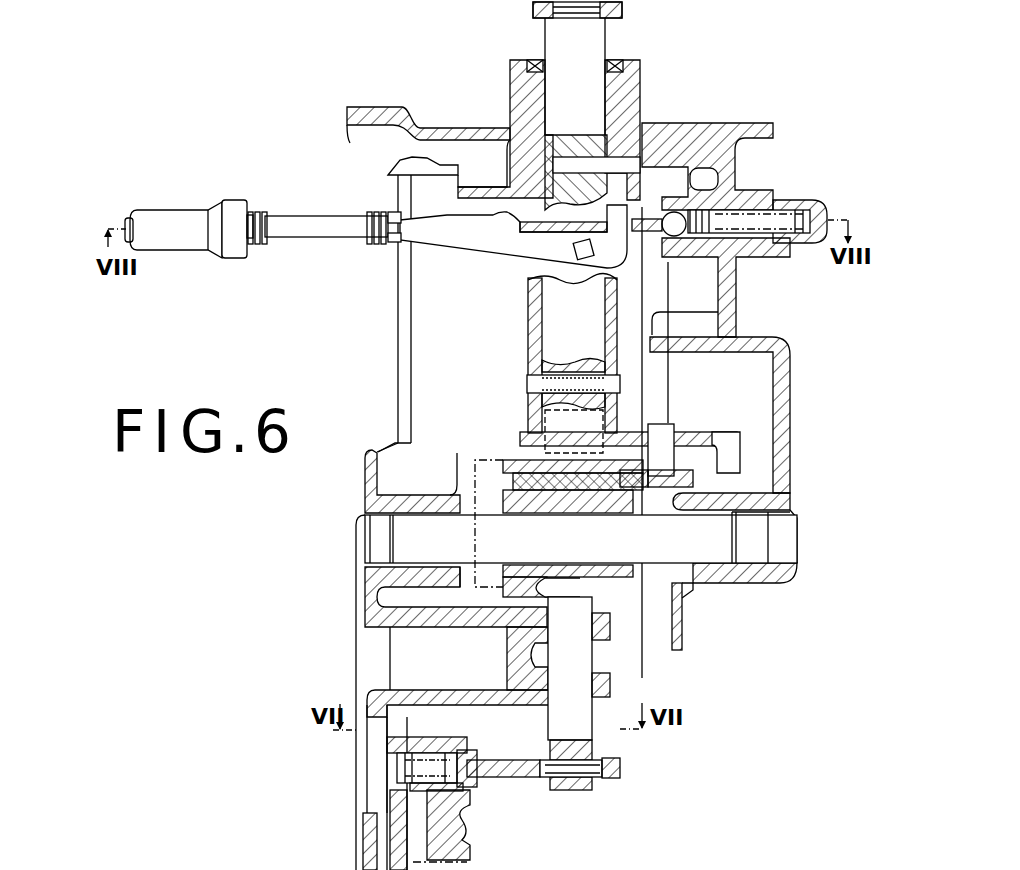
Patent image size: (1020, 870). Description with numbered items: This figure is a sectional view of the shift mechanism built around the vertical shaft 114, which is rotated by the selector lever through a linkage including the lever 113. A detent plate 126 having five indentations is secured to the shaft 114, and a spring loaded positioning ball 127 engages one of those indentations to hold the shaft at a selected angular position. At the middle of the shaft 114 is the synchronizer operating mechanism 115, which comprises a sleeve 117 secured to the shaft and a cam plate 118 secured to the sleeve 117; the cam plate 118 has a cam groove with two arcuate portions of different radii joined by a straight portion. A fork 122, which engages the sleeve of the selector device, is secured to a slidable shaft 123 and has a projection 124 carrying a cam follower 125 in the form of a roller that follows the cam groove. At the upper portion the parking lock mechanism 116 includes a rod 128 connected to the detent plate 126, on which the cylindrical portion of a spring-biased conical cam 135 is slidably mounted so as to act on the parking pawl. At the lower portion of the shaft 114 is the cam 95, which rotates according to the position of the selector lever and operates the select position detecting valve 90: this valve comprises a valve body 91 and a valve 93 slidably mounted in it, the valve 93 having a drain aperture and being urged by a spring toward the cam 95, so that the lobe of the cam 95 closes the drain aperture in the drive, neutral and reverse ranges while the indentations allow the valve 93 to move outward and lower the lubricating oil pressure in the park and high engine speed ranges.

The lever 113 is at (618, 12).
The spring loaded positioning ball 127 is at (675, 210).
The detent plate 126 is at (437, 208).
The parking lock mechanism 116 is at (293, 250).
The rod 128 is at (338, 228).
The conical cam 135 is at (190, 226).
The vertical shaft 114 is at (535, 319).
The sleeve 117 is at (528, 350).
The fork 122 is at (503, 456).
The cam follower 125 is at (676, 438).
The cam plate 118 is at (744, 444).
The synchronizer operating mechanism 115 is at (758, 478).
The projection 124 is at (626, 503).
The slidable shaft 123 is at (455, 512).
The select position detecting valve 90 is at (516, 795).
The valve body 91 is at (468, 742).
The cam 95 is at (523, 762).
The valve 93 is at (452, 810).